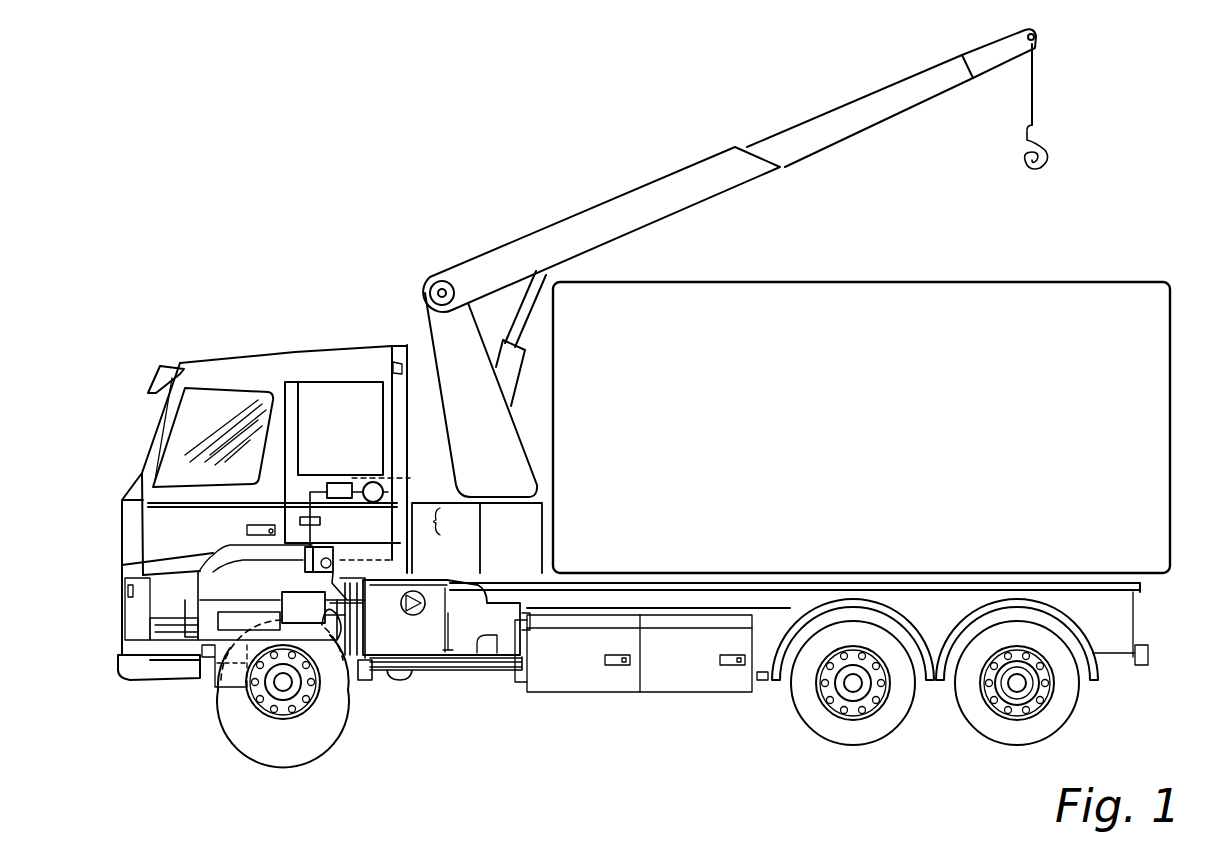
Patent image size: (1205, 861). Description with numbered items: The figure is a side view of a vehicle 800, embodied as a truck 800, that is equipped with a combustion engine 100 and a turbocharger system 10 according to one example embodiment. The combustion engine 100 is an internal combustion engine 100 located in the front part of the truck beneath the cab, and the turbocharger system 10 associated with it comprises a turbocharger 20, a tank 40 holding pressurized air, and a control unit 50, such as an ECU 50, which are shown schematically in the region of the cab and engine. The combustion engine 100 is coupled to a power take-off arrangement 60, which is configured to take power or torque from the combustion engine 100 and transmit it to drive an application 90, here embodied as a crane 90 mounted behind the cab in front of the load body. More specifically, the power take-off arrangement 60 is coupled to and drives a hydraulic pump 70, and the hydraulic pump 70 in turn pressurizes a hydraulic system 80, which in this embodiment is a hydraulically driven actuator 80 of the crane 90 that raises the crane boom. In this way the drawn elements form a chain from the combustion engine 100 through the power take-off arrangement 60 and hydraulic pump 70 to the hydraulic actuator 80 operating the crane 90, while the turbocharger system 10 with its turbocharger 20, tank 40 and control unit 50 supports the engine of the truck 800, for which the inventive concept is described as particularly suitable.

The vehicle 800 is at (644, 513).
The crane 90 is at (650, 208).
The hydraulic system 80 is at (524, 328).
The tank 40 is at (343, 483).
The control unit 50 is at (387, 493).
The turbocharger system 10 is at (477, 538).
The turbocharger 20 is at (345, 567).
The hydraulic pump 70 is at (412, 616).
The power take-off arrangement 60 is at (300, 610).
The combustion engine 100 is at (210, 628).